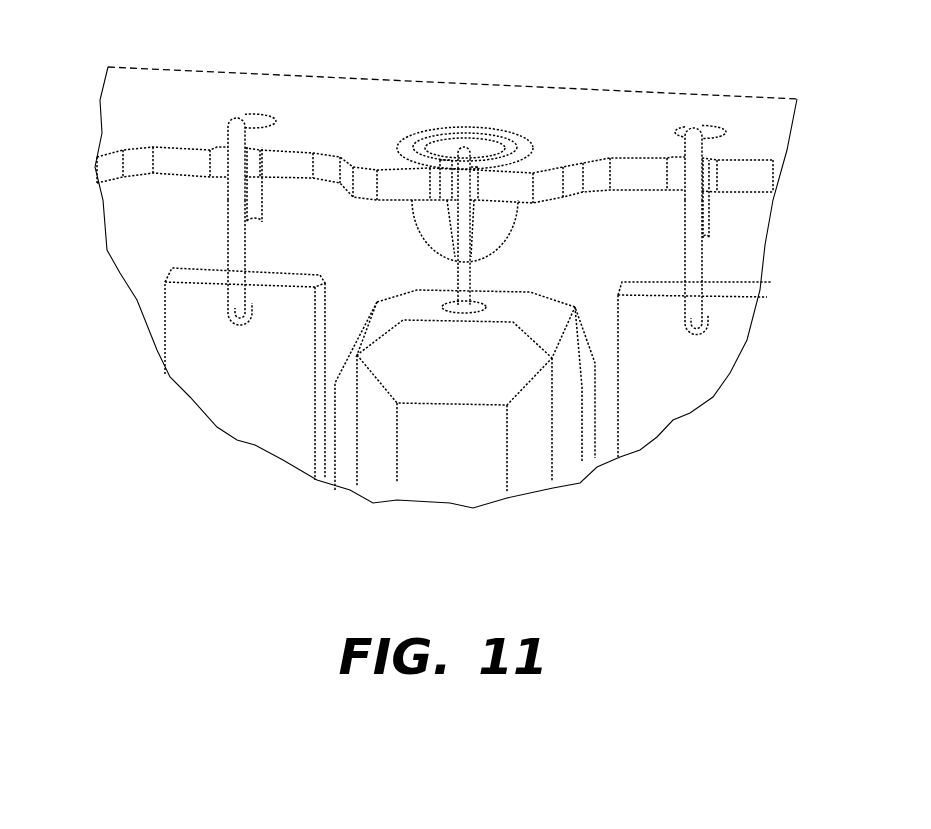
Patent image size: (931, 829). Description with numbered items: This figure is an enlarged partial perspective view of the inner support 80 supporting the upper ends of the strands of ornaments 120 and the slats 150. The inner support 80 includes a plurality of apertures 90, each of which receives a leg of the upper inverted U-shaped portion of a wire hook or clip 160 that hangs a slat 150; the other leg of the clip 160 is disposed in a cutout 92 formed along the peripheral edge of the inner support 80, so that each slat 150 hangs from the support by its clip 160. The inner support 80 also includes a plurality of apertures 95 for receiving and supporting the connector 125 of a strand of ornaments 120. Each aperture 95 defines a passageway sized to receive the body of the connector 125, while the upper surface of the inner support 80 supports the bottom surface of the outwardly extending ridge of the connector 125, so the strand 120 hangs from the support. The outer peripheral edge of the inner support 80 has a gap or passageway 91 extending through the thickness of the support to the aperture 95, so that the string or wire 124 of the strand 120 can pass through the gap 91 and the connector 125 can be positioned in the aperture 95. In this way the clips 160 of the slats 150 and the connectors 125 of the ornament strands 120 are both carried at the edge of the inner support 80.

The inner support 80 is at (621, 90).
The aperture 90 is at (263, 117).
The gap or passageway 91 is at (475, 185).
The cutout 92 is at (218, 147).
The aperture 95 is at (507, 130).
The strand of ornaments 120 is at (444, 478).
The string or wire 124 is at (467, 280).
The connector 125 is at (415, 140).
The slat 150 is at (233, 403).
The wire hook or clip 160 is at (235, 244).